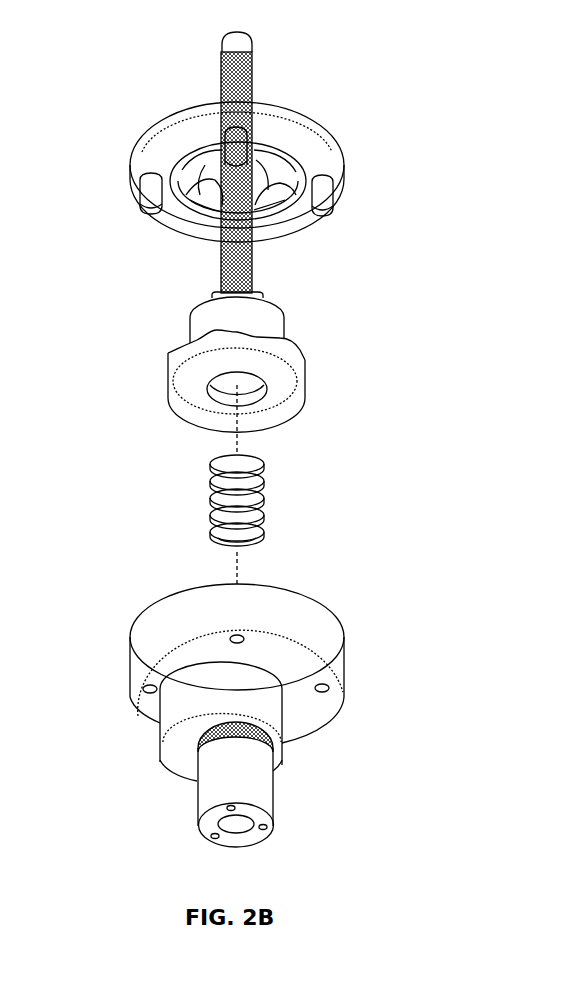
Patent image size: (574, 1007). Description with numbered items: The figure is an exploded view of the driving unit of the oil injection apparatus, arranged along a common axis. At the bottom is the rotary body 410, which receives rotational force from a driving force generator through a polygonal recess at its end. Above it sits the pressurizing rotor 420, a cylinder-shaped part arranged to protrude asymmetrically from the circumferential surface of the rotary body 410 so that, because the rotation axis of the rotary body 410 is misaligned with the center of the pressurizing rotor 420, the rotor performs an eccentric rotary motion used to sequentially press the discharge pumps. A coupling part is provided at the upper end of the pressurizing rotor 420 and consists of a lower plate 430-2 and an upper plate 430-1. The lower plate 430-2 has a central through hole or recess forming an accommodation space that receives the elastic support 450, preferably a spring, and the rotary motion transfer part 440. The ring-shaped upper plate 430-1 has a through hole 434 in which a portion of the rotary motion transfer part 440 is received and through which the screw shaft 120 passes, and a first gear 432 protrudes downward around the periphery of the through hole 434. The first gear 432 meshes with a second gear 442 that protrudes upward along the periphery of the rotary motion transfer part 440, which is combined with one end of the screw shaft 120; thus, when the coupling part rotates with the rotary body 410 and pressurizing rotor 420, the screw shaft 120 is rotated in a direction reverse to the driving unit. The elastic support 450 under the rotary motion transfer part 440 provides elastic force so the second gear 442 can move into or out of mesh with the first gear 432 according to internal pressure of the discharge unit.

The screw shaft 120 is at (217, 242).
The upper plate 430-1 is at (133, 151).
The through hole 434 is at (303, 162).
The first gear 432 is at (330, 190).
The rotary motion transfer part 440 is at (203, 318).
The second gear 442 is at (290, 338).
The elastic support 450 is at (213, 488).
The lower plate 430-2 is at (136, 644).
The pressurizing rotor 420 is at (182, 697).
The rotary body 410 is at (222, 782).